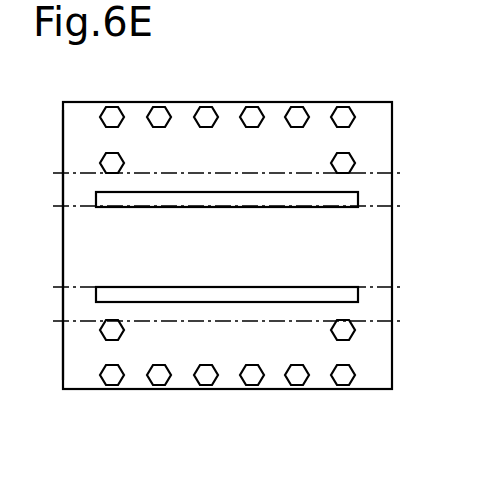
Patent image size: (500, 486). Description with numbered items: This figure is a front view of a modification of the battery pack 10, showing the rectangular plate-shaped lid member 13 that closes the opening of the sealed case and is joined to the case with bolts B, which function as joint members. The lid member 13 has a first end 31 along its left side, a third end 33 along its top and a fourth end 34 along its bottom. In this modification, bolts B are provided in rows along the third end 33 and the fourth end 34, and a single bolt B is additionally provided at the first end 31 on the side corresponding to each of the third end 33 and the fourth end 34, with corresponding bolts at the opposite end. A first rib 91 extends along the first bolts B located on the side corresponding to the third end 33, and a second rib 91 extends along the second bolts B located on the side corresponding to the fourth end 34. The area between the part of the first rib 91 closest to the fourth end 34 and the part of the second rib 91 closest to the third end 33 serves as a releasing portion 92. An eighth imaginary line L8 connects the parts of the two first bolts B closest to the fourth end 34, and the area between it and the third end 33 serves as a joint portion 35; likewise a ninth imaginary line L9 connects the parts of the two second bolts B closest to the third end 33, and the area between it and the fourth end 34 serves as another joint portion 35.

The battery pack 10 is at (392, 71).
The lid member 13 is at (320, 113).
The first end 31 is at (63, 135).
The third end 33 is at (190, 102).
The fourth end 34 is at (190, 389).
The joint portion 35 is at (394, 103).
The rib 91 is at (305, 199).
The releasing portion 92 is at (394, 207).
The bolt B is at (158, 107).
The eighth imaginary line L8 is at (222, 173).
The ninth imaginary line L9 is at (173, 320).